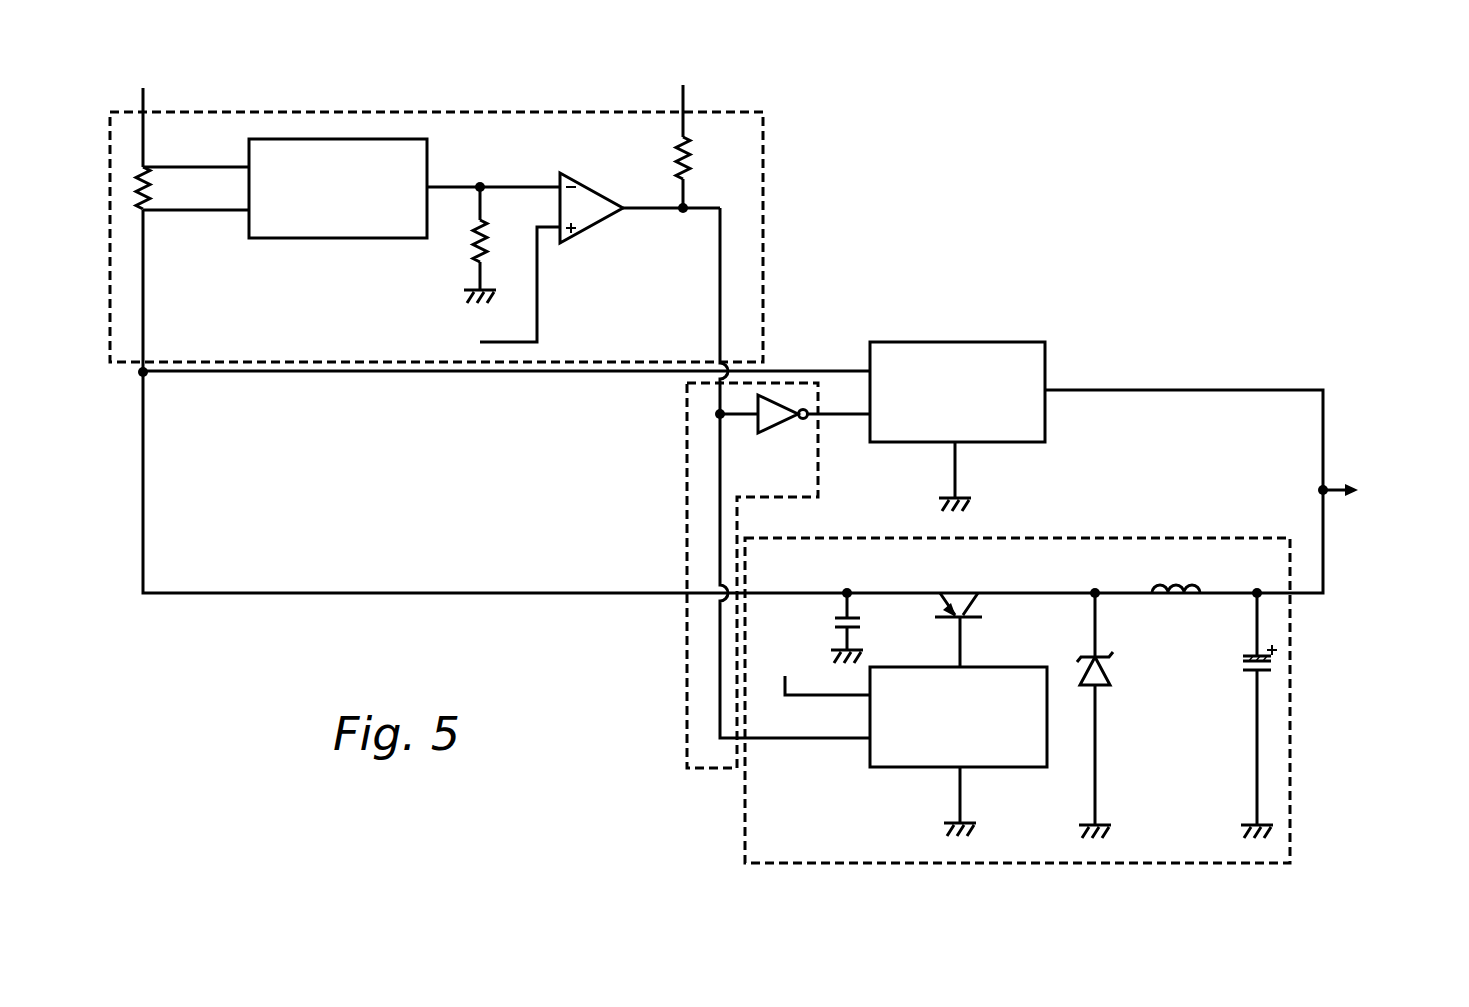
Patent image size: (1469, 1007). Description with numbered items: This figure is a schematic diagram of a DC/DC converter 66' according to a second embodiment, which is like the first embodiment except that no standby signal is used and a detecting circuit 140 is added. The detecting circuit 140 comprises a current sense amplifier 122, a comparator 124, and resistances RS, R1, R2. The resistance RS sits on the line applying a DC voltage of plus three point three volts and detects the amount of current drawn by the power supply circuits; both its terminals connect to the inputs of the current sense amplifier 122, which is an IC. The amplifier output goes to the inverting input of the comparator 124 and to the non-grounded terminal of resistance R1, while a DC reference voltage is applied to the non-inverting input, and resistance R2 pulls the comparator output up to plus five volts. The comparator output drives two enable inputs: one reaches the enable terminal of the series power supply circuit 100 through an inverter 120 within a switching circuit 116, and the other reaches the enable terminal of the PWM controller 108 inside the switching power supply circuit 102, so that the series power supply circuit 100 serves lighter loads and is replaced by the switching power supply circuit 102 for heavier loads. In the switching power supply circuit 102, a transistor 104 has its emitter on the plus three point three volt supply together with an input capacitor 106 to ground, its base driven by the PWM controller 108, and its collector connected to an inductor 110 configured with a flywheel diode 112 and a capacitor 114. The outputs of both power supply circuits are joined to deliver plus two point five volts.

The DC/DC converter 66' is at (767, 462).
The detecting circuit 140 is at (552, 104).
The current sense amplifier 122 is at (381, 239).
The comparator 124 is at (592, 183).
The resistance R1 is at (487, 237).
The resistance R2 is at (692, 160).
The resistance RS is at (192, 191).
The switching circuit 116 is at (687, 693).
The inverter 120 is at (772, 434).
The series power supply circuit 100 is at (1003, 341).
The switching power supply circuit 102 is at (1241, 522).
The transistor 104 is at (962, 593).
The capacitor 106 is at (835, 621).
The PWM controller 108 is at (1003, 667).
The inductor 110 is at (1178, 602).
The flywheel diode 112 is at (1112, 665).
The capacitor 114 is at (1228, 680).